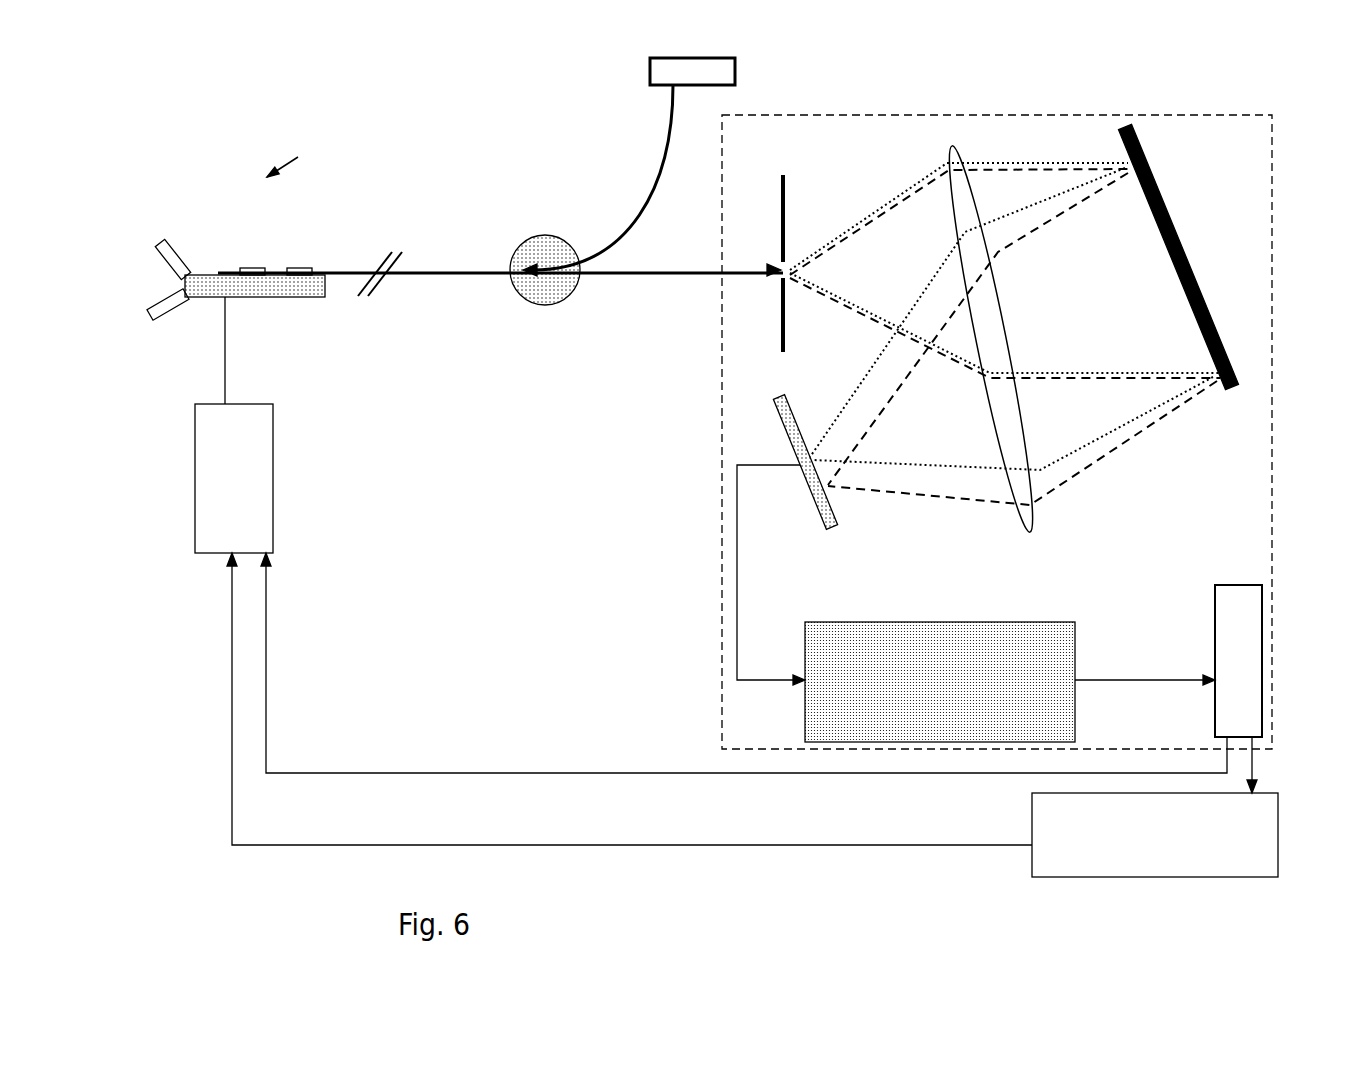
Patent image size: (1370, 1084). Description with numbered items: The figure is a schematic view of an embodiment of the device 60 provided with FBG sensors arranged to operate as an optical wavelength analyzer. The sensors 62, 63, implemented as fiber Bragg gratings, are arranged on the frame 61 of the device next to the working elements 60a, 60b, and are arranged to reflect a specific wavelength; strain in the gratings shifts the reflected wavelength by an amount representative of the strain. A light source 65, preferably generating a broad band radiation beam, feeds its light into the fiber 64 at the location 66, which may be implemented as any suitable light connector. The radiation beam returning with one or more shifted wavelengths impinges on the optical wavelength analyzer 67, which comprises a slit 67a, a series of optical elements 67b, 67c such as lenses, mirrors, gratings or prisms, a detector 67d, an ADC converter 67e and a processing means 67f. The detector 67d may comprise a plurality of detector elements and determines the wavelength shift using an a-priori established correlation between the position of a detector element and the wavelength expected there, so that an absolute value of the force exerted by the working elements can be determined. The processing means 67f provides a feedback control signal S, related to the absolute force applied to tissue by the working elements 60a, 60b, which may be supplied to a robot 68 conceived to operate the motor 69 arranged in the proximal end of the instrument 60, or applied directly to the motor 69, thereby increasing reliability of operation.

The device 60 is at (298, 157).
The working element 60a is at (160, 320).
The working element 60b is at (170, 238).
The frame 61 is at (288, 298).
The sensor 62 is at (257, 268).
The sensor 63 is at (303, 267).
The fiber 64 is at (417, 260).
The light source 65 is at (735, 72).
The location (light connector) 66 is at (533, 307).
The optical wavelength analyzer 67 is at (722, 400).
The slit 67a is at (785, 193).
The optical element 67b is at (1015, 315).
The optical element 67c is at (1190, 255).
The detector 67d is at (835, 530).
The ADC converter 67e is at (1053, 620).
The processing means 67f is at (1237, 582).
The robot 68 is at (1275, 817).
The motor 69 is at (275, 519).
The control signal S is at (1253, 768).